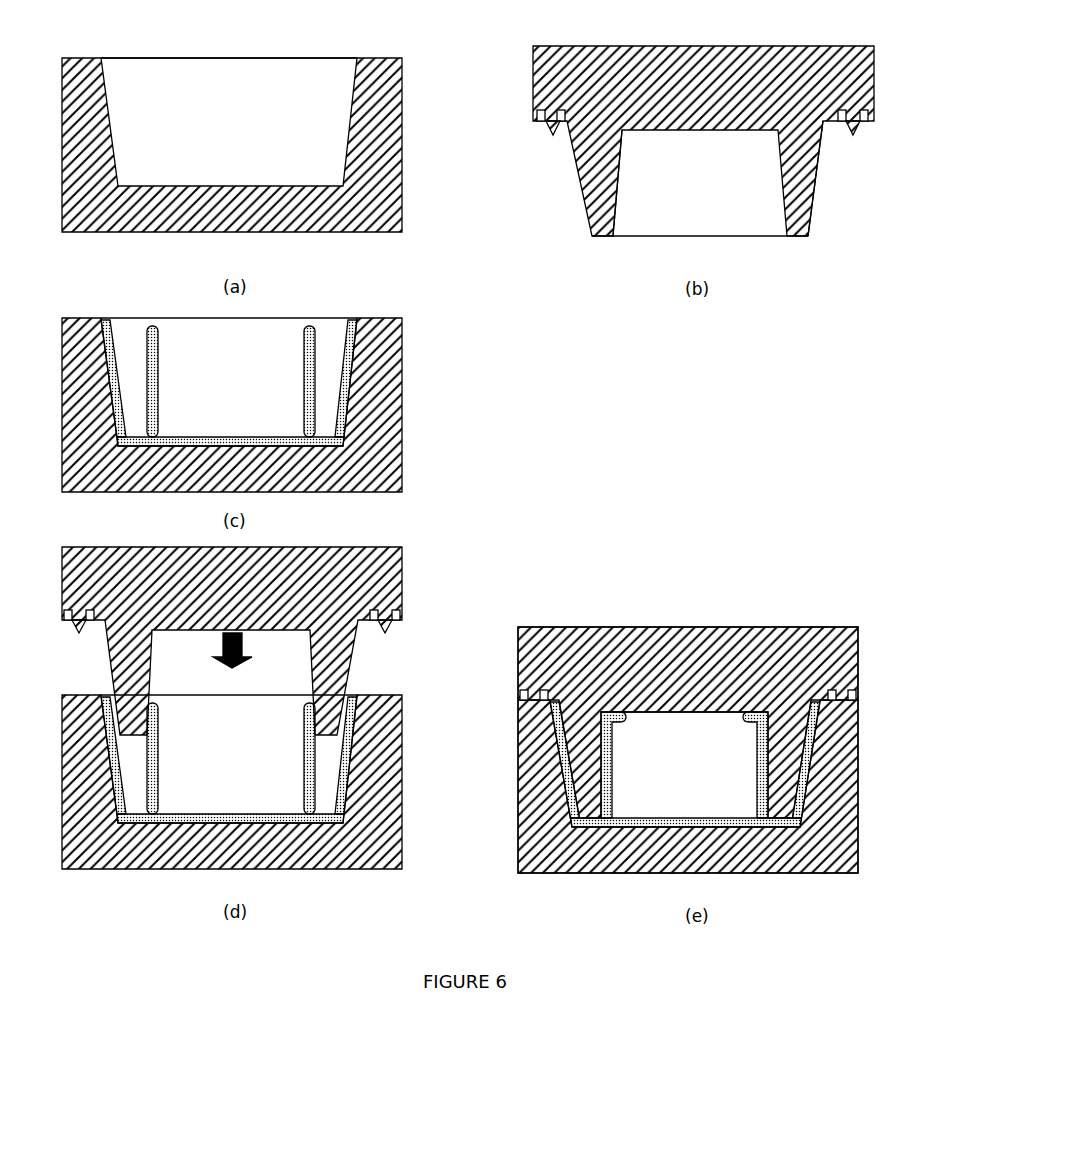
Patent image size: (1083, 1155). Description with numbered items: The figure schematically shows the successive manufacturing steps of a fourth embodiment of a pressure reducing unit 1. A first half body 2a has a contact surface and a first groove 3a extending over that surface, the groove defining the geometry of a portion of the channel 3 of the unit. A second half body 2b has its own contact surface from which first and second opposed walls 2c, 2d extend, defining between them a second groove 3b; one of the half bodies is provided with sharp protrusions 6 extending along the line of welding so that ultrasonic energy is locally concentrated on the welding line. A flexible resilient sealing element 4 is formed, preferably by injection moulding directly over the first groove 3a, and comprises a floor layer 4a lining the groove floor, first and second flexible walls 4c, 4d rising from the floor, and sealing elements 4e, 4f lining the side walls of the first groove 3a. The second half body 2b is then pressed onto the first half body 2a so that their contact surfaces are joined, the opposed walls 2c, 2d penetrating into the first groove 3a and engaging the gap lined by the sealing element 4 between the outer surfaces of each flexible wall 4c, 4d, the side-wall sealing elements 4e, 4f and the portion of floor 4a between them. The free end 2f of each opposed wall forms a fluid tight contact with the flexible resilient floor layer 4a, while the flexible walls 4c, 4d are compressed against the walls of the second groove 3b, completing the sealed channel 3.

The pressure reducing unit 1 is at (803, 579).
The first half body 2a is at (455, 224).
The second half body 2b is at (503, 80).
The first opposed wall 2c is at (635, 199).
The second opposed wall 2d is at (829, 195).
The free end of first and second walls 2f is at (687, 252).
The channel 3 is at (687, 755).
The first groove 3a is at (229, 44).
The second groove 3b is at (700, 244).
The flexible resilient sealing element 4 is at (243, 377).
The floor layer 4a is at (459, 609).
The first flexible wall 4c is at (403, 560).
The second flexible wall 4d is at (523, 560).
The sealing element lining first groove side wall 4e is at (340, 560).
The sealing element lining first groove side wall 4f is at (576, 560).
The sharp protrusions 6 is at (466, 405).